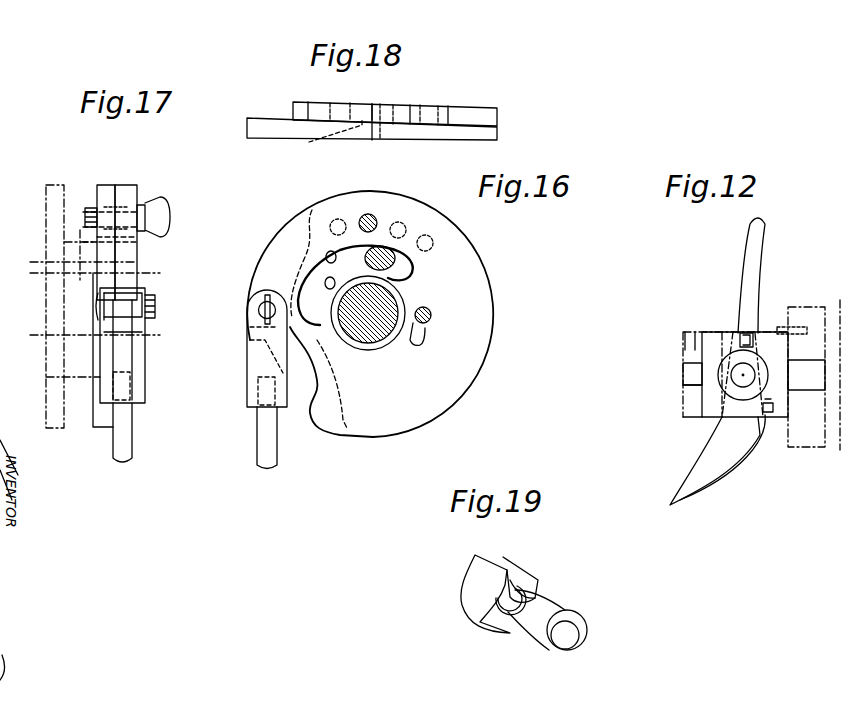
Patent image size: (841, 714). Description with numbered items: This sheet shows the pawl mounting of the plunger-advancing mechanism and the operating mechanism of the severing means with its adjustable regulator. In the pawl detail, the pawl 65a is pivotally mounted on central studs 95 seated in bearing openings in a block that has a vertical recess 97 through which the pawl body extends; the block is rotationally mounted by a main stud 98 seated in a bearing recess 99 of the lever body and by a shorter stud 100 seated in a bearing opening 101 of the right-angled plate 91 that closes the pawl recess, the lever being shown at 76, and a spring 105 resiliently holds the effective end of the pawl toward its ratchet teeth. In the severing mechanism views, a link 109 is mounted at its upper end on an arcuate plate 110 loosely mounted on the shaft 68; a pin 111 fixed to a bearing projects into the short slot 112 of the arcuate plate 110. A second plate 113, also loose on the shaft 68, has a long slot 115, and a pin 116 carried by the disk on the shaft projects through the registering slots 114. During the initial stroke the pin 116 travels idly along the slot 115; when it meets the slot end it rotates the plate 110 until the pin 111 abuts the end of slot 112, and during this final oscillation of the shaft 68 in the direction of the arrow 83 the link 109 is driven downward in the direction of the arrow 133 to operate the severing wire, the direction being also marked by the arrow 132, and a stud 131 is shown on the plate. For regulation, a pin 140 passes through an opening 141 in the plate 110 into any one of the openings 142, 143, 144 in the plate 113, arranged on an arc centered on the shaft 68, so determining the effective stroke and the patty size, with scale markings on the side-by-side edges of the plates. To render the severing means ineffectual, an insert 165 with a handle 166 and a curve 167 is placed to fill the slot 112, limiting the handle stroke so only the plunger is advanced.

In FIG. 17, the link 109 is at (123, 455).
In FIG. 16, the link 109 is at (265, 453).
In FIG. 17, the arcuate plate 110 is at (130, 190).
In FIG. 18, the arcuate plate 110 is at (465, 135).
In FIG. 16, the arcuate plate 110 is at (286, 232).
In FIG. 16, the pin 111 is at (432, 313).
In FIG. 16, the short slot 112 is at (425, 342).
In FIG. 17, the plate 113 is at (102, 192).
In FIG. 18, the plate 113 is at (475, 115).
In FIG. 16, the plate 113 is at (481, 273).
In FIG. 16, the slots 114 is at (330, 353).
In FIG. 16, the long slot 115 is at (332, 245).
In FIG. 16, the pin 116 is at (403, 251).
In FIG. 16, the stud 131 is at (426, 307).
In FIG. 16, the direction arrow 132 is at (247, 255).
In FIG. 16, the arrow 133 is at (230, 390).
In FIG. 17, the pin 140 is at (160, 212).
In FIG. 16, the pin 140 is at (359, 217).
In FIG. 17, the opening 141 is at (122, 208).
In FIG. 18, the opening 141 is at (322, 139).
In FIG. 16, the opening 141 is at (380, 213).
In FIG. 17, the opening 142 is at (105, 207).
In FIG. 18, the opening 142 is at (373, 102).
In FIG. 16, the opening 142 is at (342, 219).
In FIG. 16, the opening 143 is at (400, 222).
In FIG. 16, the opening 144 is at (435, 242).
In FIG. 16, the shaft 68 is at (394, 298).
In FIG. 16, the arrow 83 is at (393, 343).
In FIG. 12, the pawl tip 65a is at (766, 228).
In FIG. 12, the frame 76 is at (811, 308).
In FIG. 12, the right-angled plate 91 is at (695, 332).
In FIG. 12, the central studs 95 is at (753, 373).
In FIG. 12, the vertical recess 97 is at (767, 333).
In FIG. 12, the main stud 98 is at (813, 367).
In FIG. 12, the bearing recess 99 is at (807, 389).
In FIG. 12, the shorter stud 100 is at (687, 368).
In FIG. 12, the bearing opening 101 is at (692, 387).
In FIG. 12, the spring 105 is at (753, 440).
In FIG. 19, the insert 165 is at (480, 577).
In FIG. 19, the handle 166 is at (563, 608).
In FIG. 19, the curve 167 is at (515, 570).